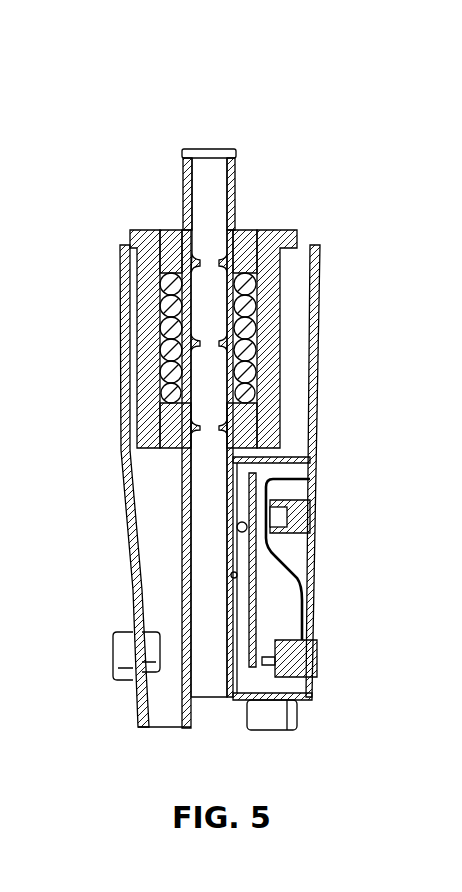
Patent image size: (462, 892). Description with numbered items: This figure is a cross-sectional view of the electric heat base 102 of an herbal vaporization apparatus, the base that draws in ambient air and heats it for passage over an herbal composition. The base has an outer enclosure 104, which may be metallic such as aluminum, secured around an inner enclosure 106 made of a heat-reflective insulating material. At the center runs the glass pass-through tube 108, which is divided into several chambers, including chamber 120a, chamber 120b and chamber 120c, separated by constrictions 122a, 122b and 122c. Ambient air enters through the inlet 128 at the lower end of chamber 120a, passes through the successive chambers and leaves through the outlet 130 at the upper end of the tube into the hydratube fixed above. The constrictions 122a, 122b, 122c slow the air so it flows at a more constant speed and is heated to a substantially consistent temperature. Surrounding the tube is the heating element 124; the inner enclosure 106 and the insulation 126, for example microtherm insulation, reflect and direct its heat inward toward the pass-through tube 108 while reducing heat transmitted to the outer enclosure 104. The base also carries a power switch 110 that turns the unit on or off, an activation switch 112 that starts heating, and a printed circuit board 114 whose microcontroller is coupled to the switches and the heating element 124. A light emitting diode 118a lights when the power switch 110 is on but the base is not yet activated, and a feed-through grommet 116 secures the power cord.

The electric heat base 102 is at (304, 163).
The outer enclosure 104 is at (128, 285).
The inner enclosure 106 is at (274, 328).
The pass-through tube 108 is at (183, 200).
The power switch 110 is at (318, 662).
The activation switch 112 is at (312, 520).
The printed circuit board 114 is at (256, 612).
The feed-through grommet 116 is at (118, 634).
The light emitting diode 118a is at (240, 530).
The chamber 120a is at (200, 527).
The chamber 120b is at (206, 378).
The chamber 120c is at (204, 175).
The constriction 122a is at (206, 426).
The constriction 122b is at (210, 334).
The constriction 122c is at (210, 255).
The heating element 124 is at (258, 368).
The insulation 126 is at (258, 255).
The inlet 128 is at (213, 698).
The outlet 130 is at (210, 150).